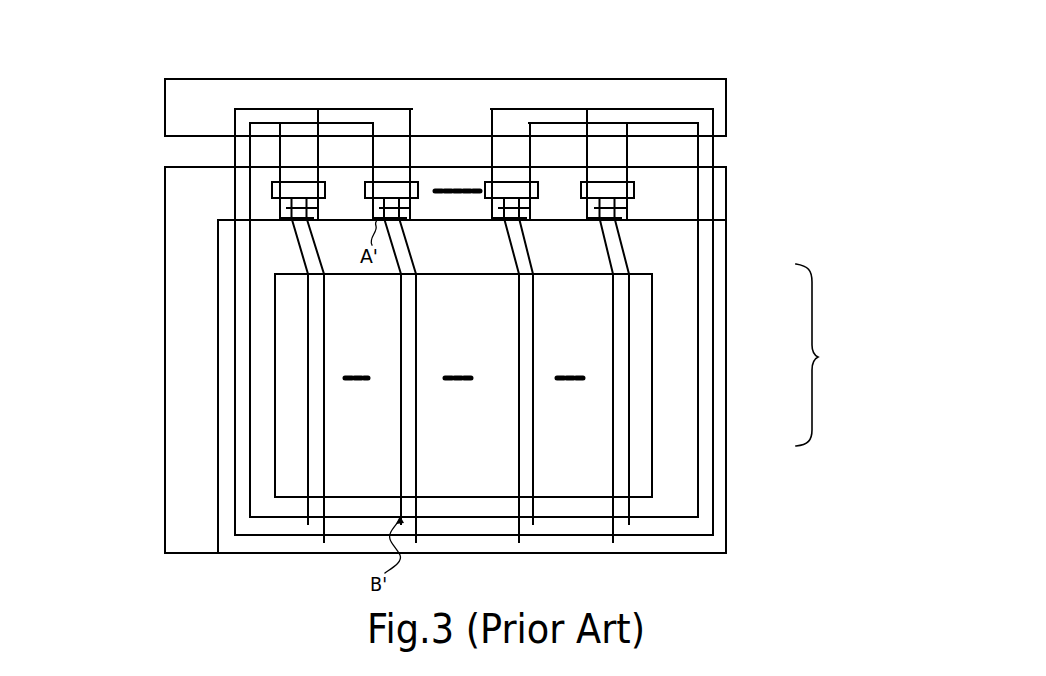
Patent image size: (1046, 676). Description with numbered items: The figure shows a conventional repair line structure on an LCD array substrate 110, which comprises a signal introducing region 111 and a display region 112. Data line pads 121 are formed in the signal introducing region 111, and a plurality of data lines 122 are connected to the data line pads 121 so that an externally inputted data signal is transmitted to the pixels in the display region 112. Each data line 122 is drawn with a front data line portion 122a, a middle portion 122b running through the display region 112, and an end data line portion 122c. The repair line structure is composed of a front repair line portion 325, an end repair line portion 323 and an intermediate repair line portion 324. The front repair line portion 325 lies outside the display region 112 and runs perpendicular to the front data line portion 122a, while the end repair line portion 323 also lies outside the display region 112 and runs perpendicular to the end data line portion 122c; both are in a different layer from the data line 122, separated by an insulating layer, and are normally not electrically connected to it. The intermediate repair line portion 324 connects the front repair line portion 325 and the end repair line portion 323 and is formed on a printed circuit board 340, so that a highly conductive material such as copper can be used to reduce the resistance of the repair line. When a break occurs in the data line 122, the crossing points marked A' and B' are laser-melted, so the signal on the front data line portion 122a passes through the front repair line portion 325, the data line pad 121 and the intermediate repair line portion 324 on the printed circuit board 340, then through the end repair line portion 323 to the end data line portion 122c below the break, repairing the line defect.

The LCD array substrate 110 is at (138, 81).
The signal introducing region 111 is at (203, 259).
The display region 112 is at (299, 449).
The data line pad 121 is at (392, 190).
The data line 122 is at (822, 355).
The front data line portion 122a is at (395, 248).
The signal line straight portion 122b is at (401, 321).
The end data line portion 122c is at (402, 500).
The end repair line portion 323 is at (713, 235).
The intermediate repair line portion 324 is at (292, 109).
The front repair line portion 325 is at (628, 204).
The printed circuit board 340 is at (712, 93).